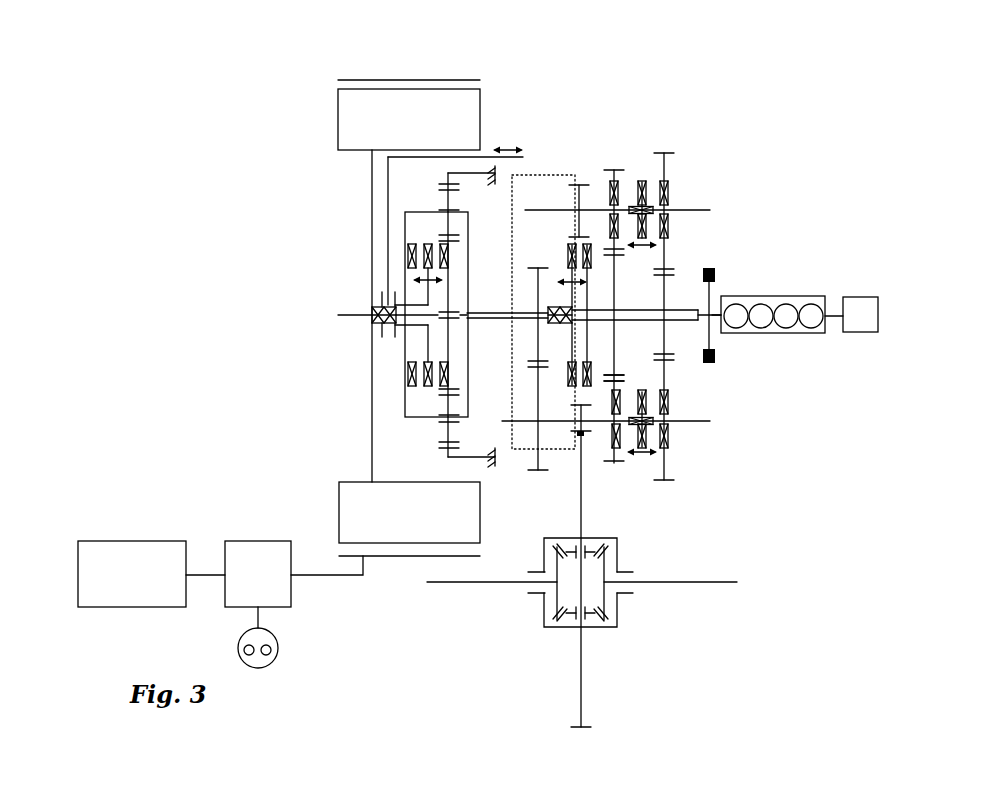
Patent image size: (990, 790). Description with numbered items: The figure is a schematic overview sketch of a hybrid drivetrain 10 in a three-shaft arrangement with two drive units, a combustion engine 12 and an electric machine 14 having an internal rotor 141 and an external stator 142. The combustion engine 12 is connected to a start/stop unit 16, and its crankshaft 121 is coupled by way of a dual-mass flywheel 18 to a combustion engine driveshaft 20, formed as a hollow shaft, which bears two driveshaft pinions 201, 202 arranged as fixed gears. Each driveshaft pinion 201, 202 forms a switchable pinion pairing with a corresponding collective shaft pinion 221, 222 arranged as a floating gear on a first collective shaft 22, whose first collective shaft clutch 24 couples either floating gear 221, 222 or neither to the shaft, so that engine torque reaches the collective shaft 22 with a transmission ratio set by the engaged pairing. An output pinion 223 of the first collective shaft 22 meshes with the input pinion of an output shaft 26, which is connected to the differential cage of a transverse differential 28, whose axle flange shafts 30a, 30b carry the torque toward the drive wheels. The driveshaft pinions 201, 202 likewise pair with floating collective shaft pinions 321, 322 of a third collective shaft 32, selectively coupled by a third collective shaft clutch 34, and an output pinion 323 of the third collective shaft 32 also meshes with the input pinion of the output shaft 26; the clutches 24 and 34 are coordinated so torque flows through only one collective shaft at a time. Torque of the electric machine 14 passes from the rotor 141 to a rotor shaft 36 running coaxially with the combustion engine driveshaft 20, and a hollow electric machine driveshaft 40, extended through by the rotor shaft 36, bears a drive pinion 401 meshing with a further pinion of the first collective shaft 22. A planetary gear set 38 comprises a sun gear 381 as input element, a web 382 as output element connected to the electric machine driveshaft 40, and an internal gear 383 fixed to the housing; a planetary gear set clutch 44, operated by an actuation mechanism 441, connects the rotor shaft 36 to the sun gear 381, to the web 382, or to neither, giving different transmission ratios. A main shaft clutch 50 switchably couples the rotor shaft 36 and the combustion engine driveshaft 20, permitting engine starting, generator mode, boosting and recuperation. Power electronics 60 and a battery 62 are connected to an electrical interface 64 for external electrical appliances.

The drivetrain 10 is at (882, 114).
The combustion engine 12 is at (795, 302).
The crankshaft 121 is at (718, 305).
The electric machine 14 is at (308, 86).
The rotor 141 is at (363, 119).
The stator 142 is at (357, 79).
The start/stop unit 16 is at (872, 303).
The dual-mass flywheel 18 is at (720, 292).
The combustion engine driveshaft 20 is at (686, 303).
The driveshaft pinion 201 is at (665, 350).
The driveshaft pinion 202 is at (616, 360).
The first collective shaft 22 is at (708, 421).
The collective shaft pinion 221 is at (667, 447).
The collective shaft pinion 222 is at (620, 455).
The output pinion 223 is at (600, 465).
The first collective shaft clutch 24 is at (642, 457).
The output shaft 26 is at (575, 483).
The transverse differential 28 is at (588, 600).
The axle flange shaft 30a is at (440, 583).
The axle flange shaft 30b is at (728, 583).
The third collective shaft 32 is at (690, 208).
The collective shaft pinion 321 is at (655, 153).
The collective shaft pinion 322 is at (605, 170).
The output pinion 323 is at (575, 187).
The third collective shaft clutch 34 is at (639, 206).
The rotor shaft 36 is at (353, 317).
The planetary gear set 38 is at (398, 238).
The sun gear 381 is at (448, 293).
The web 382 is at (422, 212).
The internal gear 383 is at (470, 172).
The electric machine driveshaft 40 is at (488, 316).
The drive pinion 401 is at (537, 290).
The planetary gear set clutch 44 is at (412, 275).
The actuation mechanism 441 is at (493, 143).
The main shaft clutch 50 is at (560, 342).
The power electronics 60 is at (232, 598).
The battery 62 is at (132, 595).
The electrical interface 64 is at (242, 655).